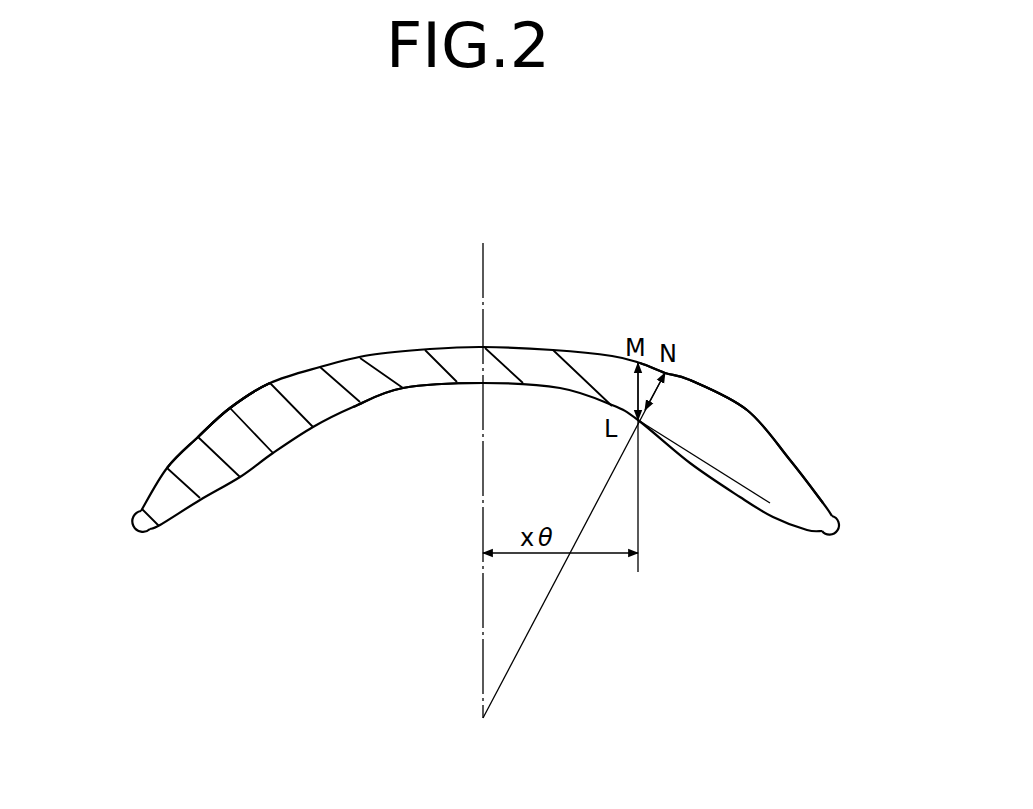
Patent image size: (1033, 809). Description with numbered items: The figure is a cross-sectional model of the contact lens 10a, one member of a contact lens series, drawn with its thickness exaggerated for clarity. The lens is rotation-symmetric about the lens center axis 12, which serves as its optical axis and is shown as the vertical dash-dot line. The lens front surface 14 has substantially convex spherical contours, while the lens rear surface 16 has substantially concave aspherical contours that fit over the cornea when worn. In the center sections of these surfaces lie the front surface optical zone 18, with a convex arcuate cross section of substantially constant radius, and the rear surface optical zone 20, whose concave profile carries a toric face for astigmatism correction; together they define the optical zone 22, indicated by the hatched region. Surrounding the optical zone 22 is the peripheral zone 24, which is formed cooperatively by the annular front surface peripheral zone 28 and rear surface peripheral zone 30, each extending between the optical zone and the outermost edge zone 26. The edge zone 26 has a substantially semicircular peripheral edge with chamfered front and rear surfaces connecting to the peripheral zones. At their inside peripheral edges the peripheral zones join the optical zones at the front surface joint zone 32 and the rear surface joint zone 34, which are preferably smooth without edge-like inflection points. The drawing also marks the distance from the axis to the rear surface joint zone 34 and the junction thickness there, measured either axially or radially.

The contact lens 10a is at (479, 405).
The lens center axis 12 is at (483, 258).
The lens front surface 14 is at (256, 310).
The lens rear surface 16 is at (300, 484).
The front surface optical zone 18 is at (547, 348).
The rear surface optical zone 20 is at (418, 389).
The optical zone 22 is at (407, 330).
The peripheral zone 24 is at (209, 390).
The edge zone 26 is at (118, 505).
The front surface peripheral zone 28 is at (748, 410).
The rear surface peripheral zone 30 is at (753, 506).
The front surface joint zone 32 is at (692, 377).
The rear surface joint zone 34 is at (708, 465).